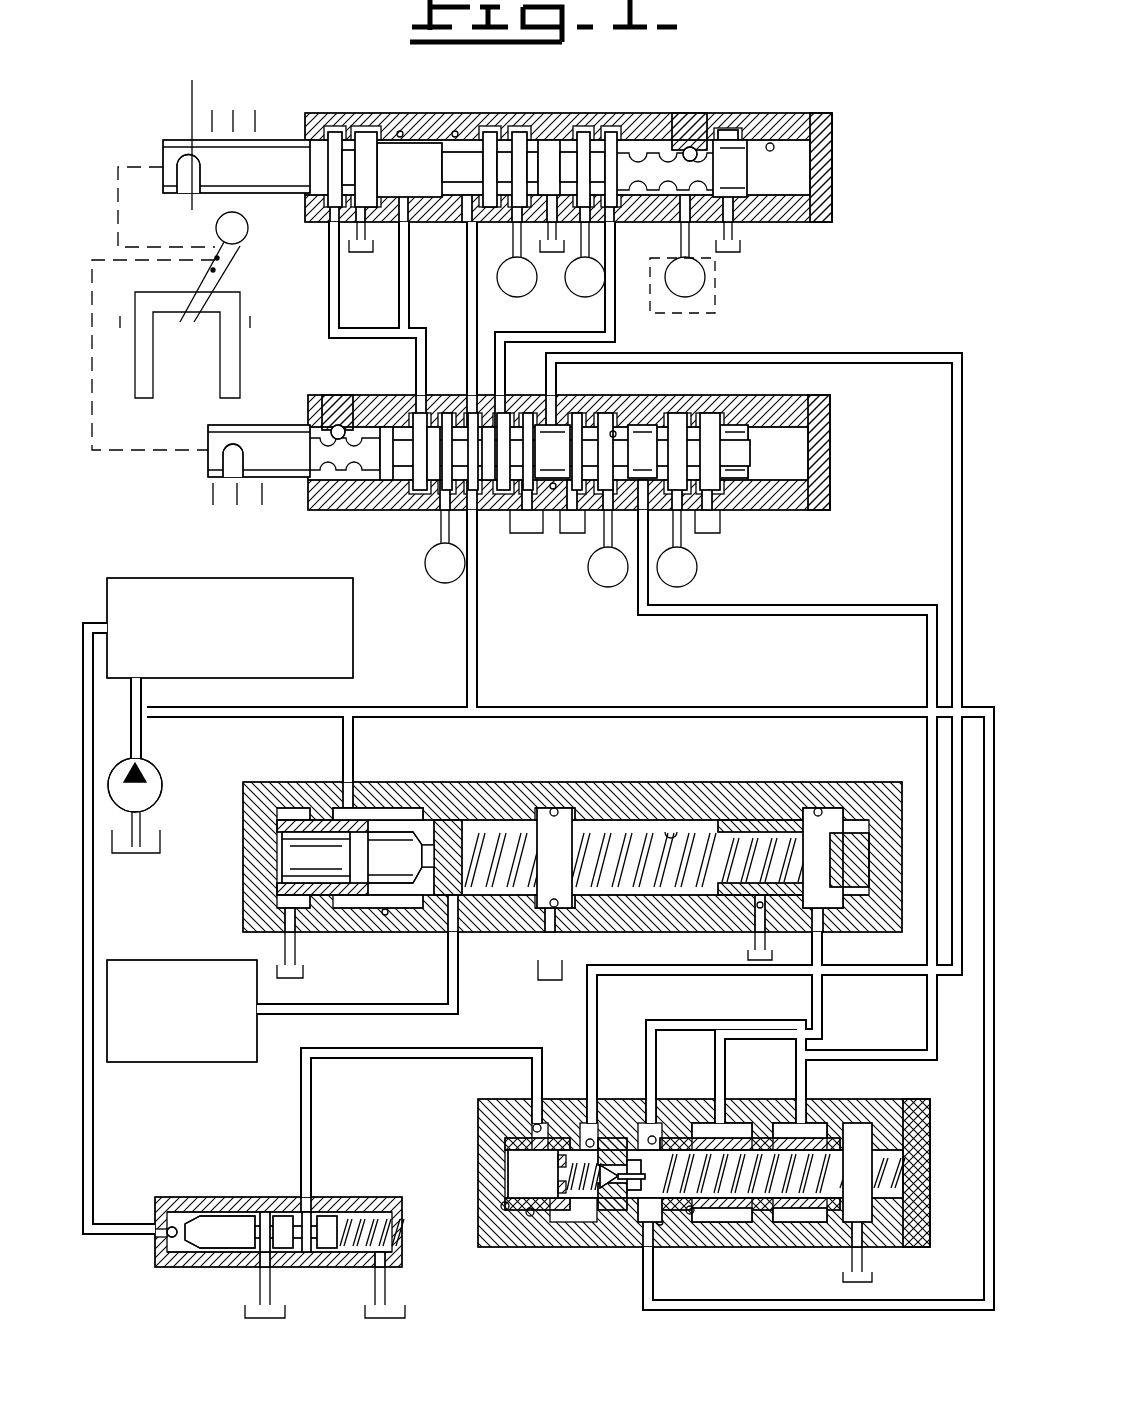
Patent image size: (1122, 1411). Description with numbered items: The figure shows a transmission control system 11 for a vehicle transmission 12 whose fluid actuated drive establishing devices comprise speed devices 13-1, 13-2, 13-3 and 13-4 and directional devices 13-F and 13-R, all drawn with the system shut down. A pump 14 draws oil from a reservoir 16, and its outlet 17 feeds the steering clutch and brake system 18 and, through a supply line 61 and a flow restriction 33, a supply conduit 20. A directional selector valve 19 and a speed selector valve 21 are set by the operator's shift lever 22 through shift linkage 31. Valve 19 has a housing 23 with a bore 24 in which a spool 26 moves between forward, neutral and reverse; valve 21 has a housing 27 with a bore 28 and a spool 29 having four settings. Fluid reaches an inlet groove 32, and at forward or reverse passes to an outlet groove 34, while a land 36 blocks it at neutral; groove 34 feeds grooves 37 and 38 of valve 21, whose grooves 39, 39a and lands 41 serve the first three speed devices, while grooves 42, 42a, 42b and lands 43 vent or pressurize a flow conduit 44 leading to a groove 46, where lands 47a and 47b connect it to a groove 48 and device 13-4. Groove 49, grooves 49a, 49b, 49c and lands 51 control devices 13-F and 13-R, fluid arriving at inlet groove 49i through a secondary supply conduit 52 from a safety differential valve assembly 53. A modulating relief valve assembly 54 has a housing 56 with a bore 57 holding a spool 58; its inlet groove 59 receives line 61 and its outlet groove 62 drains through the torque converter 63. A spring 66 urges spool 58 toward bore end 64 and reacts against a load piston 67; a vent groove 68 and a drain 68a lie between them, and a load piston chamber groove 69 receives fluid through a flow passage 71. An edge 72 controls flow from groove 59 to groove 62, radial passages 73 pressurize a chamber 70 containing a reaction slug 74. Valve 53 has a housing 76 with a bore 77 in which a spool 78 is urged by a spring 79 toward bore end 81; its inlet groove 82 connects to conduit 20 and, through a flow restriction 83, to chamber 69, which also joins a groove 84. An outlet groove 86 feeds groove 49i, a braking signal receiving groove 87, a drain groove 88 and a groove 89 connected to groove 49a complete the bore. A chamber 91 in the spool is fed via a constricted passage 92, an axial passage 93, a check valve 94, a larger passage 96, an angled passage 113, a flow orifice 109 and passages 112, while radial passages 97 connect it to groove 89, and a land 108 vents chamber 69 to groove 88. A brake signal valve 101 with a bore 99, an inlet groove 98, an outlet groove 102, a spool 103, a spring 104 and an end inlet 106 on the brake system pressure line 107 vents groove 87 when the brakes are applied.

The control system 11 is at (851, 330).
The vehicle transmission 12 is at (716, 290).
The first speed drive establishing device 13-1 is at (698, 296).
The second speed drive establishing device 13-2 is at (572, 296).
The third speed drive establishing device 13-3 is at (505, 294).
The fourth speed drive establishing device 13-4 is at (442, 584).
The reverse drive establishing device 13-R is at (604, 588).
The forward drive establishing device 13-F is at (697, 570).
The pump 14 is at (158, 772).
The reservoir 16 is at (160, 846).
The pump outlet 17 is at (130, 712).
The steering clutch and brake system 18 is at (355, 646).
The directional selector valve 19 is at (849, 449).
The supply conduit 20 is at (543, 706).
The speed selector valve 21 is at (845, 150).
The shift lever 22 is at (247, 228).
The housing 23 is at (795, 512).
The bore 24 is at (800, 430).
The valve spool 26 is at (758, 459).
The housing 27 is at (800, 113).
The bore 28 is at (771, 143).
The spool 29 is at (756, 182).
The shift linkage 31 is at (118, 197).
The inlet groove 32 is at (473, 412).
The flow restriction 33 is at (400, 708).
The outlet groove 34 is at (503, 412).
The land 36 is at (492, 512).
The groove 37 is at (615, 222).
The groove 38 is at (456, 132).
The bore grooves 39 is at (520, 133).
The speed selector valve groove 39a is at (688, 128).
The spool lands 41 is at (490, 133).
The grooves 42 is at (402, 132).
The speed selector valve groove 42a is at (337, 133).
The speed selector valve groove 42b is at (367, 133).
The spool lands 43 is at (268, 176).
The flow conduit 44 is at (425, 328).
The groove 46 is at (395, 512).
The spool land 47a is at (422, 425).
The spool land 47b is at (386, 425).
The groove 48 is at (447, 490).
The groove 49 is at (710, 412).
The groove 49a is at (530, 412).
The groove 49b is at (578, 412).
The groove 49c is at (550, 490).
The inlet groove 49i is at (626, 458).
The spool lands 51 is at (640, 430).
The secondary supply conduit 52 is at (803, 617).
The safety differential valve assembly 53 is at (467, 1149).
The modulating relief valve assembly 54 is at (232, 877).
The housing 56 is at (600, 782).
The bore 57 is at (671, 832).
The spool 58 is at (365, 810).
The inlet groove 59 is at (386, 935).
The pressurized fluid supply line 61 is at (252, 718).
The outlet groove 62 is at (460, 945).
The torque converter 63 is at (135, 960).
The bore end 64 is at (262, 910).
The spring 66 is at (690, 832).
The load piston 67 is at (758, 822).
The vent groove 68 is at (552, 808).
The drain port 68a is at (757, 910).
The load piston chamber groove 69 is at (819, 810).
The chamber 70 is at (352, 885).
The flow passage 71 is at (824, 954).
The edge 72 is at (448, 820).
The radial passages 73 is at (426, 900).
The reaction slug 74 is at (300, 869).
The housing 76 is at (875, 1100).
The bore 77 is at (895, 1140).
The valve spool 78 is at (492, 1217).
The spring 79 is at (770, 1212).
The bore end 81 is at (485, 1120).
The inlet groove 82 is at (658, 1225).
The flow restriction 83 is at (722, 1020).
The groove 84 is at (820, 1128).
The outlet groove 86 is at (745, 1128).
The braking signal receiving groove 87 is at (527, 1218).
The drain groove 88 is at (862, 1240).
The groove 89 is at (603, 1190).
The chamber 91 is at (545, 1186).
The constricted flow passage 92 is at (655, 1137).
The axial spool passage 93 is at (620, 1150).
The check valve 94 is at (575, 1137).
The radial passage 96 is at (640, 1248).
The radial passages 97 is at (580, 1192).
The inlet groove 98 is at (308, 1255).
The bore 99 is at (245, 1215).
The brake signal valve 101 is at (191, 1187).
The outlet groove 102 is at (290, 1215).
The spool 103 is at (215, 1250).
The spring 104 is at (360, 1215).
The end inlet 106 is at (172, 1240).
The vehicle brake system pressure line 107 is at (94, 1107).
The land 108 is at (805, 1222).
The flow orifice 109 is at (592, 1137).
The spool passages 112 is at (690, 1215).
The angled passage 113 is at (630, 1182).